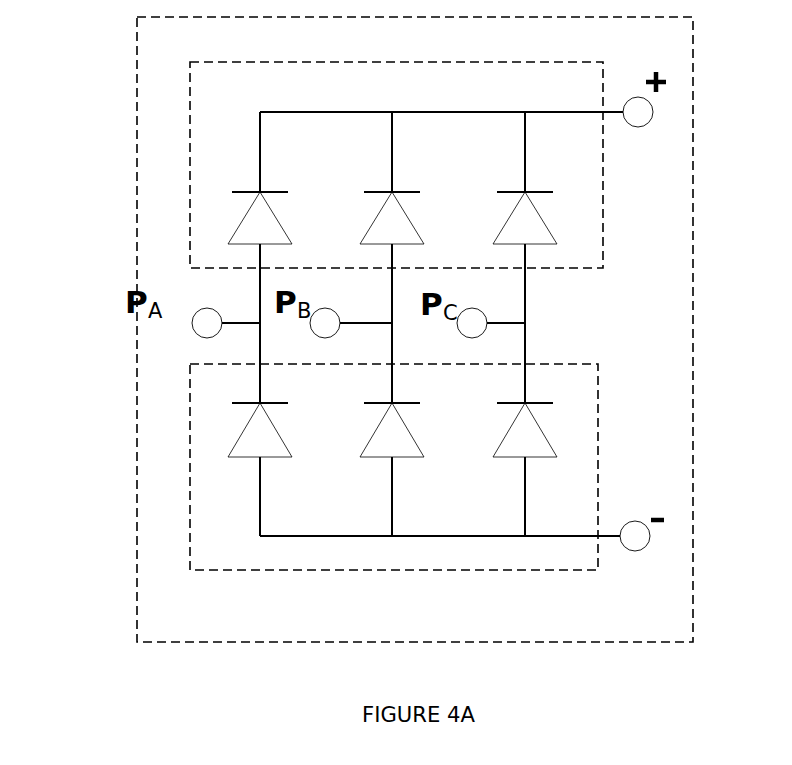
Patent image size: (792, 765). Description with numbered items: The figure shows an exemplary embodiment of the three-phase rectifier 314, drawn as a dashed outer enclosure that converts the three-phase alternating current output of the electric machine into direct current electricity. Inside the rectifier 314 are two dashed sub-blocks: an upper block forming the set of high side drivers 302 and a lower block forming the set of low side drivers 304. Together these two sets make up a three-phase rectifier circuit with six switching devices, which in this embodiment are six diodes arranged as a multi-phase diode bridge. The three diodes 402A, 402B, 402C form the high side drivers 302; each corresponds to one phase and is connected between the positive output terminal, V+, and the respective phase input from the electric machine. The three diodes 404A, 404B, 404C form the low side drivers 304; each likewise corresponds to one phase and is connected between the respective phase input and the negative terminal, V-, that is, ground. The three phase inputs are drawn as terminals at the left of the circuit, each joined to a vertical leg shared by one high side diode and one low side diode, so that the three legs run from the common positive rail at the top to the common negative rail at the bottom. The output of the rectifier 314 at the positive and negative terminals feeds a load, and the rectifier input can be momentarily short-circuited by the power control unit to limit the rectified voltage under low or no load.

The three-phase rectifier 314 is at (693, 150).
The high side drivers 302 is at (603, 258).
The low side drivers 304 is at (598, 440).
The diode 402A is at (275, 217).
The diode 402B is at (412, 223).
The diode 402C is at (582, 181).
The diode 404A is at (268, 430).
The diode 404B is at (407, 435).
The diode 404C is at (580, 398).